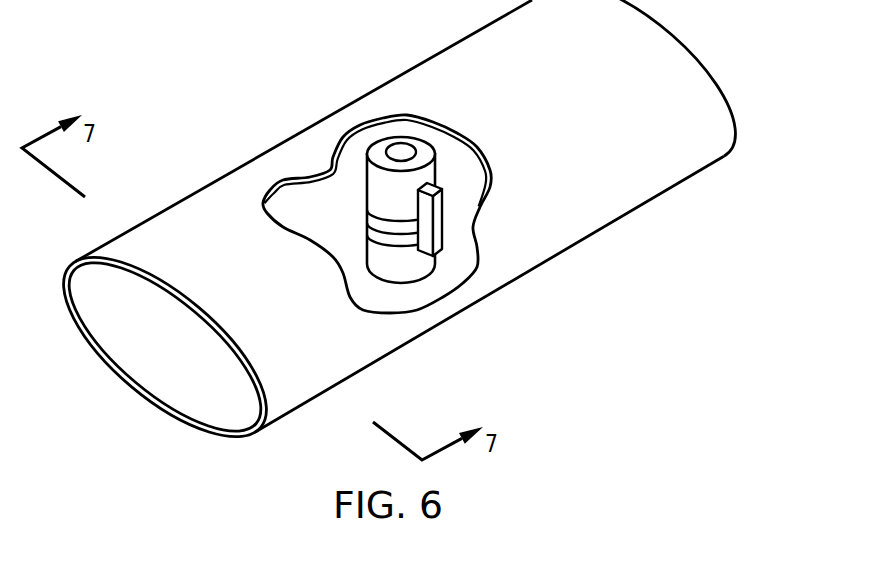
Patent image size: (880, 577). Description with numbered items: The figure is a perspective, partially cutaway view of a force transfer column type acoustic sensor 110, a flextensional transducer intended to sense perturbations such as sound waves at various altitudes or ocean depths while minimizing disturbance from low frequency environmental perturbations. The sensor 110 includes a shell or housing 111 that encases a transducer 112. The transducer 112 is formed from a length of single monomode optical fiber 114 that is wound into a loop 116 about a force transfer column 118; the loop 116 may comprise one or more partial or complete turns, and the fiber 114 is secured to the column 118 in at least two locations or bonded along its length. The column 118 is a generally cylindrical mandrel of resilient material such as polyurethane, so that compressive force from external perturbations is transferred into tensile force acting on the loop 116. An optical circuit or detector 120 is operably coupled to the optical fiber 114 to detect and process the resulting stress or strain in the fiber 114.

The acoustic sensor 110 is at (389, 233).
The shell or housing 111 is at (663, 42).
The transducer 112 is at (357, 245).
The optical fiber 114 is at (382, 243).
The loop 116 is at (398, 218).
The force transfer column 118 is at (382, 143).
The optical circuit or detector 120 is at (437, 212).